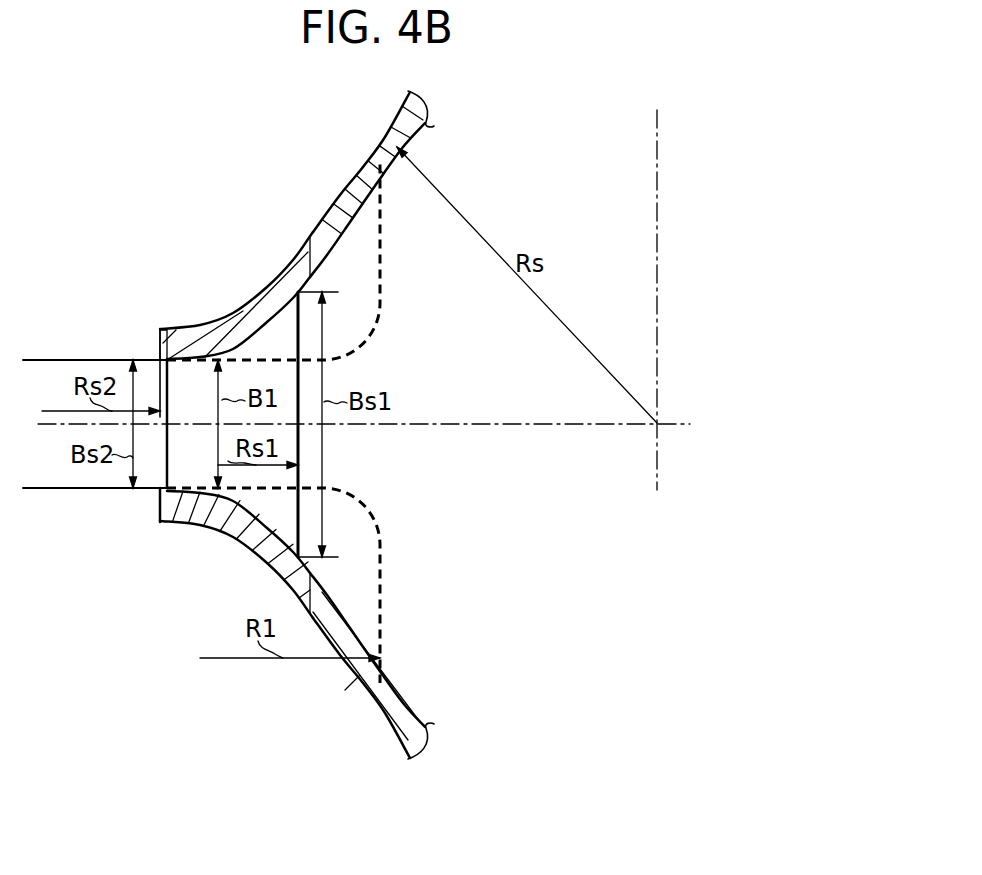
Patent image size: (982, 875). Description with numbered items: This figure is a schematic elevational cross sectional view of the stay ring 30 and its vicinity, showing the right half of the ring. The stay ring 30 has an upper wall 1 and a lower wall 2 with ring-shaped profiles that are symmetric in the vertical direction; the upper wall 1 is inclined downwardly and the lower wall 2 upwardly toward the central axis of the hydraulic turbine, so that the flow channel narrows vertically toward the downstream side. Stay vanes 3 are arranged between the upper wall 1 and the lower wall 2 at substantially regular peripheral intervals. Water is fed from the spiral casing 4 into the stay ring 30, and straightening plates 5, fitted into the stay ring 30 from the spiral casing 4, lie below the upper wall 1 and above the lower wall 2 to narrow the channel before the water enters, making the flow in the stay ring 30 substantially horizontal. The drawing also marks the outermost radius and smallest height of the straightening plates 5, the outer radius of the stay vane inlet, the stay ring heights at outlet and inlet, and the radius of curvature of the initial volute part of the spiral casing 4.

The stay ring 30 is at (236, 252).
The upper wall 1 is at (227, 318).
The lower wall 2 is at (223, 537).
The stay vanes 3 is at (177, 373).
The spiral casing 4 is at (343, 170).
The straightening plates 5 is at (355, 345).